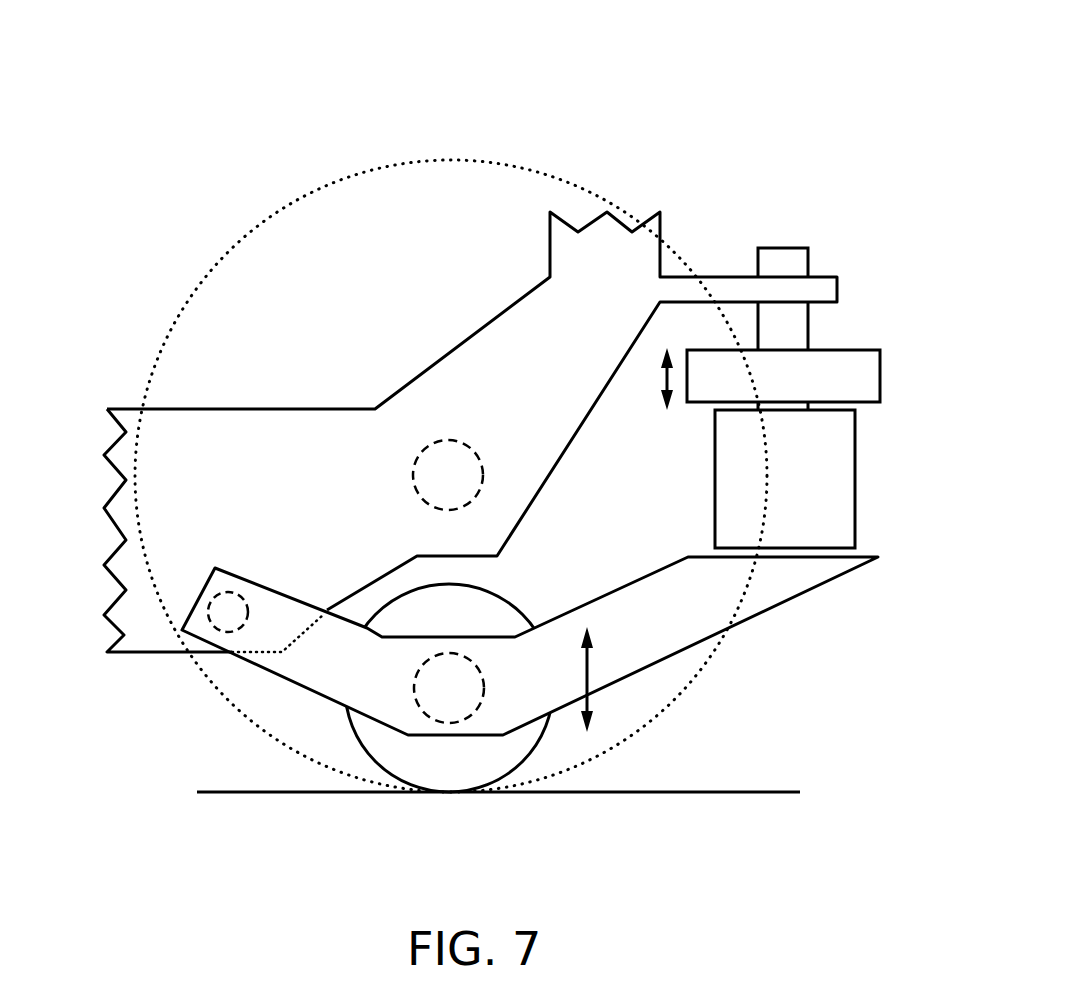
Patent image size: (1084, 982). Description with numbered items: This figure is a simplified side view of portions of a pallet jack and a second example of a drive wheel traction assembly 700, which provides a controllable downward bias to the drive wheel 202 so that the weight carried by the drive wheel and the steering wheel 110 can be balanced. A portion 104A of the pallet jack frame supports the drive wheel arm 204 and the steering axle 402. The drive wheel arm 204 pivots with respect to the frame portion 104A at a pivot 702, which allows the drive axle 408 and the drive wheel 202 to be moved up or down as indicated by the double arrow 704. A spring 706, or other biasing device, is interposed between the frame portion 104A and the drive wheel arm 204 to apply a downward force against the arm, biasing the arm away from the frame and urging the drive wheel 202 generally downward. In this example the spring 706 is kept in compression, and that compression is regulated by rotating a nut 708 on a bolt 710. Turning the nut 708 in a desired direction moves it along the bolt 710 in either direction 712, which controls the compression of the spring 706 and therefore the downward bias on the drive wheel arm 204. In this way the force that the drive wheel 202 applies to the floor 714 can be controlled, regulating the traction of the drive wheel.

The drive wheel traction assembly 700 is at (582, 86).
The steering wheel 110 is at (320, 187).
The portion of the frame 104A is at (282, 409).
The steering axle 402 is at (435, 443).
The direction of nut movement 712 is at (667, 382).
The bolt 710 is at (780, 248).
The nut 708 is at (852, 350).
The spring 706 is at (713, 507).
The drive wheel arm 204 is at (625, 585).
The pivot 702 is at (247, 600).
The direction of drive wheel movement 704 is at (588, 673).
The drive wheel 202 is at (373, 760).
The drive axle 408 is at (465, 717).
The floor 714 is at (233, 792).